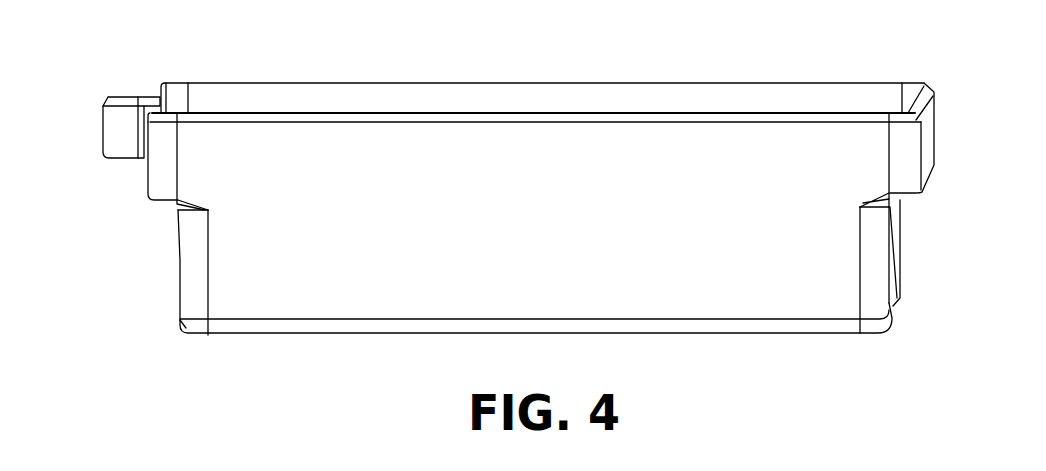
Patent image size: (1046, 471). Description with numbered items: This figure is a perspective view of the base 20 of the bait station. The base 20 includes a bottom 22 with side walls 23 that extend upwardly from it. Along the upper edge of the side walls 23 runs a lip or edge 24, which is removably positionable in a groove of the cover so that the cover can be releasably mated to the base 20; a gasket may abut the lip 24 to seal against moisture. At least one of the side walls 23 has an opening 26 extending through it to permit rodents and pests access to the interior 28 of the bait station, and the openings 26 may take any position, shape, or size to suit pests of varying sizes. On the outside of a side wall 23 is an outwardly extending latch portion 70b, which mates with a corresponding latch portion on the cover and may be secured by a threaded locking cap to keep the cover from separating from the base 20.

The base 20 is at (508, 100).
The bottom 22 is at (707, 335).
The side walls 23 is at (335, 298).
The lip or edge 24 is at (913, 86).
The openings 26 is at (897, 303).
The interior 28 is at (165, 207).
The latch portion 70b is at (117, 133).